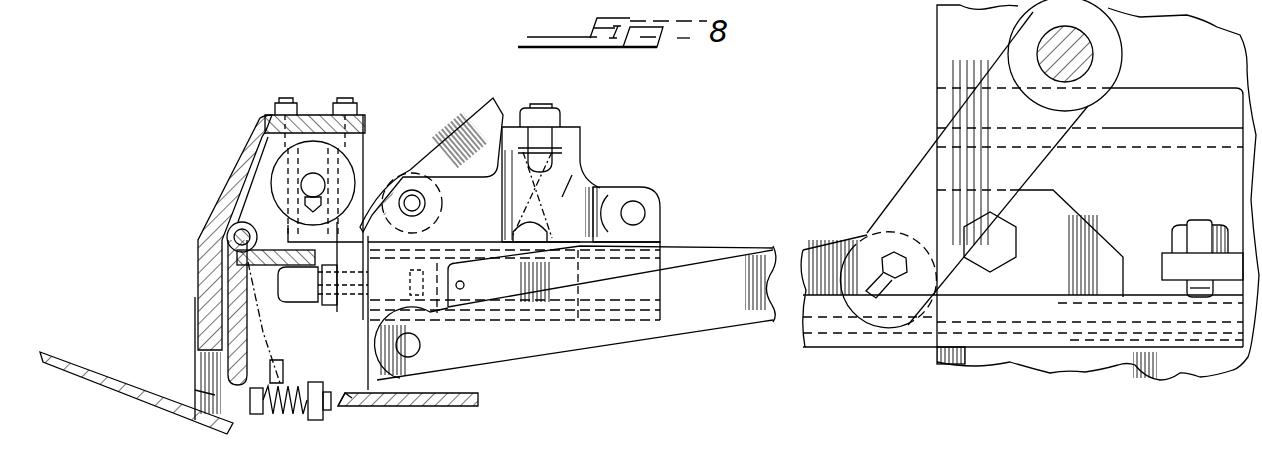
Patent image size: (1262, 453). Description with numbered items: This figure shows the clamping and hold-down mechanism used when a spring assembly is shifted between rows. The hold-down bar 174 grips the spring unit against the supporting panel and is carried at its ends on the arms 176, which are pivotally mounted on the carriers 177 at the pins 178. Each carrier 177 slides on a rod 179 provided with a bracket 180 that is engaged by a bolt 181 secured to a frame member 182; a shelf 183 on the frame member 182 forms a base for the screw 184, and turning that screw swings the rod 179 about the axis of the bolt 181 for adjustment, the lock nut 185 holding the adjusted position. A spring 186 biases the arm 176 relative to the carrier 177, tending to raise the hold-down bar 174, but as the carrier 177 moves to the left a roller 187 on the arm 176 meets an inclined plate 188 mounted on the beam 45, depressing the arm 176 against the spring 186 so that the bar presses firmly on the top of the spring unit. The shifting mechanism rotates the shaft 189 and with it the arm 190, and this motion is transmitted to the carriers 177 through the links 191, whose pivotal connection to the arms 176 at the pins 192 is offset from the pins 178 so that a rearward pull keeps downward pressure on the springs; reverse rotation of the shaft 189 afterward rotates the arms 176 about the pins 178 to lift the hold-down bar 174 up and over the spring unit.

The beam 45 is at (232, 183).
The hold-down bar 174 is at (355, 406).
The arm 176 is at (600, 195).
The carrier 177 is at (663, 247).
The pin 178 is at (640, 210).
The rod 179 is at (705, 258).
The bracket 180 is at (1085, 240).
The bolt 181 is at (1022, 237).
The frame member 182 is at (1218, 182).
The shelf 183 is at (1165, 262).
The screw 184 is at (1200, 222).
The lock nut 185 is at (1180, 238).
The spring 186 is at (568, 177).
The roller 187 is at (430, 190).
The inclined plate 188 is at (437, 128).
The shaft 189 is at (1082, 55).
The arm 190 is at (897, 193).
The link 191 is at (820, 240).
The pin 192 is at (420, 345).